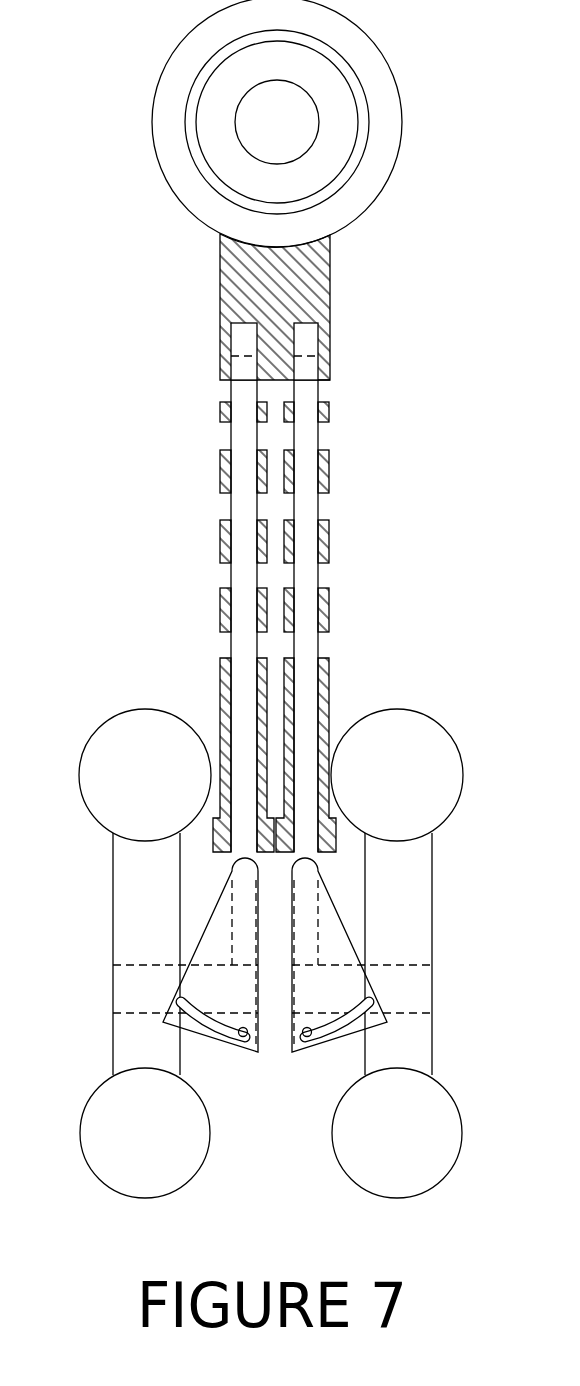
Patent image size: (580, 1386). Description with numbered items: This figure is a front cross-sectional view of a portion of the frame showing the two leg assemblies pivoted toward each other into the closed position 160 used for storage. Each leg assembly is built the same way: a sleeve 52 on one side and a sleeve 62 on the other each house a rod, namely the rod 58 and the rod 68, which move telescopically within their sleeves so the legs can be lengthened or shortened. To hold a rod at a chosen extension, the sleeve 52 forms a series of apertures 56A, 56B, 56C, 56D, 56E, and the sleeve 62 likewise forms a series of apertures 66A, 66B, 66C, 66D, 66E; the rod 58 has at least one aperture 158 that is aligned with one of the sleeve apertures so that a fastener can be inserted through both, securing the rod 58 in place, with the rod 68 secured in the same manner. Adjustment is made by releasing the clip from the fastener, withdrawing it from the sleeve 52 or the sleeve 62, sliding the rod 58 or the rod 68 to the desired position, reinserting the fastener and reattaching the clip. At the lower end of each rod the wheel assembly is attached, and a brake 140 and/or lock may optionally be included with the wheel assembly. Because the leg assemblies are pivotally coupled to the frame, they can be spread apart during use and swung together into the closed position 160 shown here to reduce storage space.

The sleeve 52 is at (237, 280).
The sleeve 62 is at (318, 264).
The aperture 158 is at (247, 377).
The aperture 56A is at (223, 641).
The aperture 56B is at (223, 571).
The aperture 56C is at (223, 503).
The aperture 56D is at (223, 439).
The aperture 56E is at (225, 390).
The aperture 66A is at (323, 641).
The aperture 66B is at (323, 573).
The aperture 66C is at (323, 507).
The aperture 66D is at (323, 437).
The aperture 66E is at (325, 391).
The rod 58 is at (240, 697).
The rod 68 is at (307, 694).
The brake 140 is at (213, 1024).
The closed position 160 is at (276, 1168).